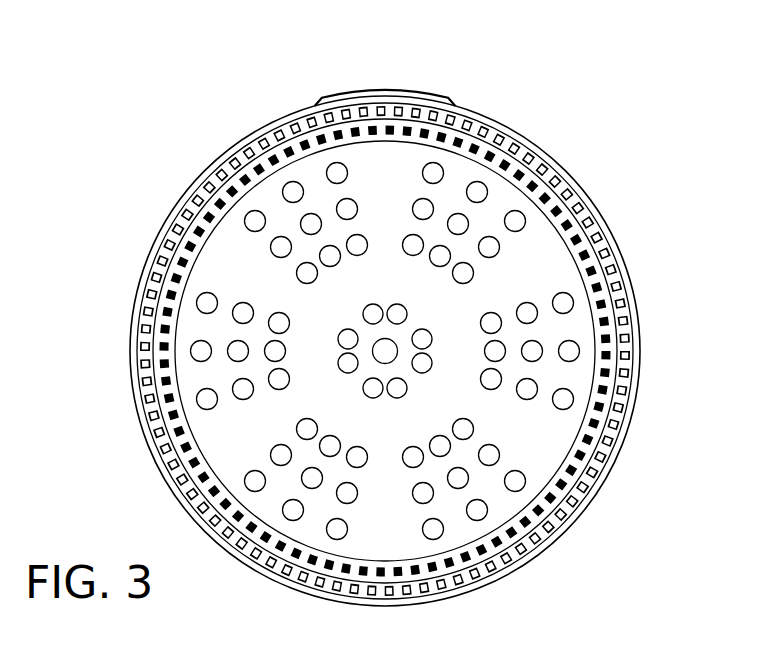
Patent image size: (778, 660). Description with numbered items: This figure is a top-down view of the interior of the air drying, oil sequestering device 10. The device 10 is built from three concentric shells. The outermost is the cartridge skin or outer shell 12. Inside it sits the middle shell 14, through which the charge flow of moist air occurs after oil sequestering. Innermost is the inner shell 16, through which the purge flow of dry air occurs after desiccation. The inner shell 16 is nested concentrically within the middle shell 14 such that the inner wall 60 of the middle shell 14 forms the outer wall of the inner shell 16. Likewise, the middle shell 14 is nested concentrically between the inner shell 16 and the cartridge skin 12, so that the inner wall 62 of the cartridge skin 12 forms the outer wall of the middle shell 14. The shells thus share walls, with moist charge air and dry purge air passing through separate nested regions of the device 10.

The air drying, oil sequestering device 10 is at (232, 78).
The cartridge skin 12 is at (560, 167).
The middle shell 14 is at (227, 168).
The inner shell 16 is at (612, 253).
The inner wall of the middle shell 60 is at (612, 378).
The inner wall of the cartridge skin 62 is at (633, 335).